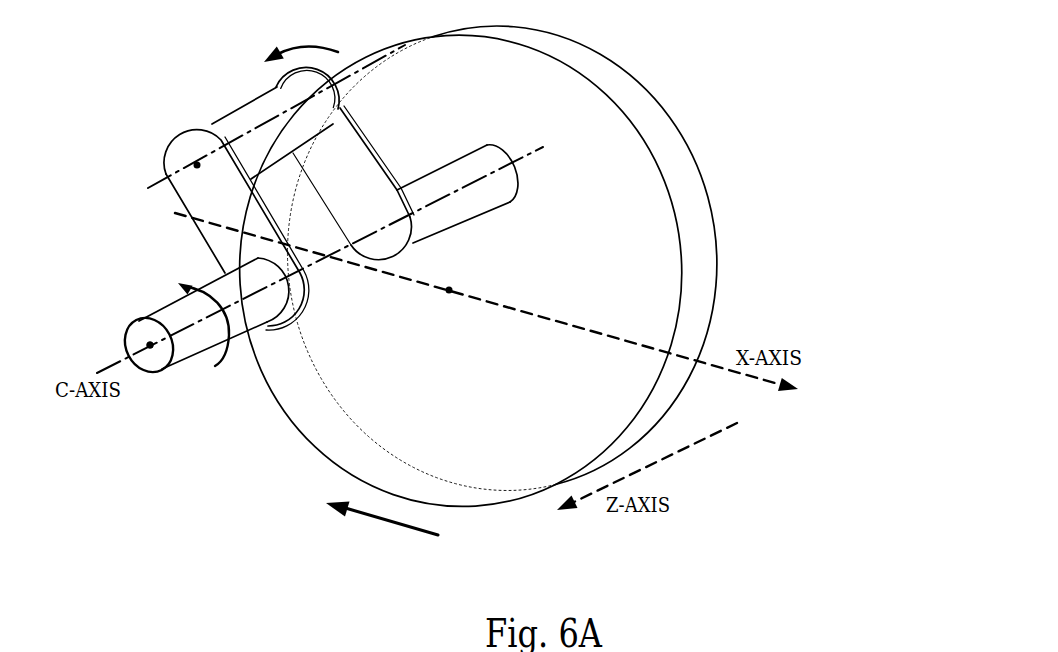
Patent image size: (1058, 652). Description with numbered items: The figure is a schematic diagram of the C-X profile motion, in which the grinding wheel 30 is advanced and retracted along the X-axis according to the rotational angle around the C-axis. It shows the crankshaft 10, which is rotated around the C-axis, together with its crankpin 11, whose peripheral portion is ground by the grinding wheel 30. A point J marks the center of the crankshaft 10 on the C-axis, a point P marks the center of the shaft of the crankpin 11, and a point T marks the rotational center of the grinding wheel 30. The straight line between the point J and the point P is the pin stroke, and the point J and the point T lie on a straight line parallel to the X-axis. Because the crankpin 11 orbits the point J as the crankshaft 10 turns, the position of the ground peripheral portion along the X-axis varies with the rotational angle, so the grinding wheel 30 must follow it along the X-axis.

The grinding wheel 30 is at (621, 67).
The crankshaft 10 is at (136, 278).
The crankpin 11 is at (233, 112).
The point P is at (186, 157).
The point J is at (150, 356).
The point T is at (440, 296).